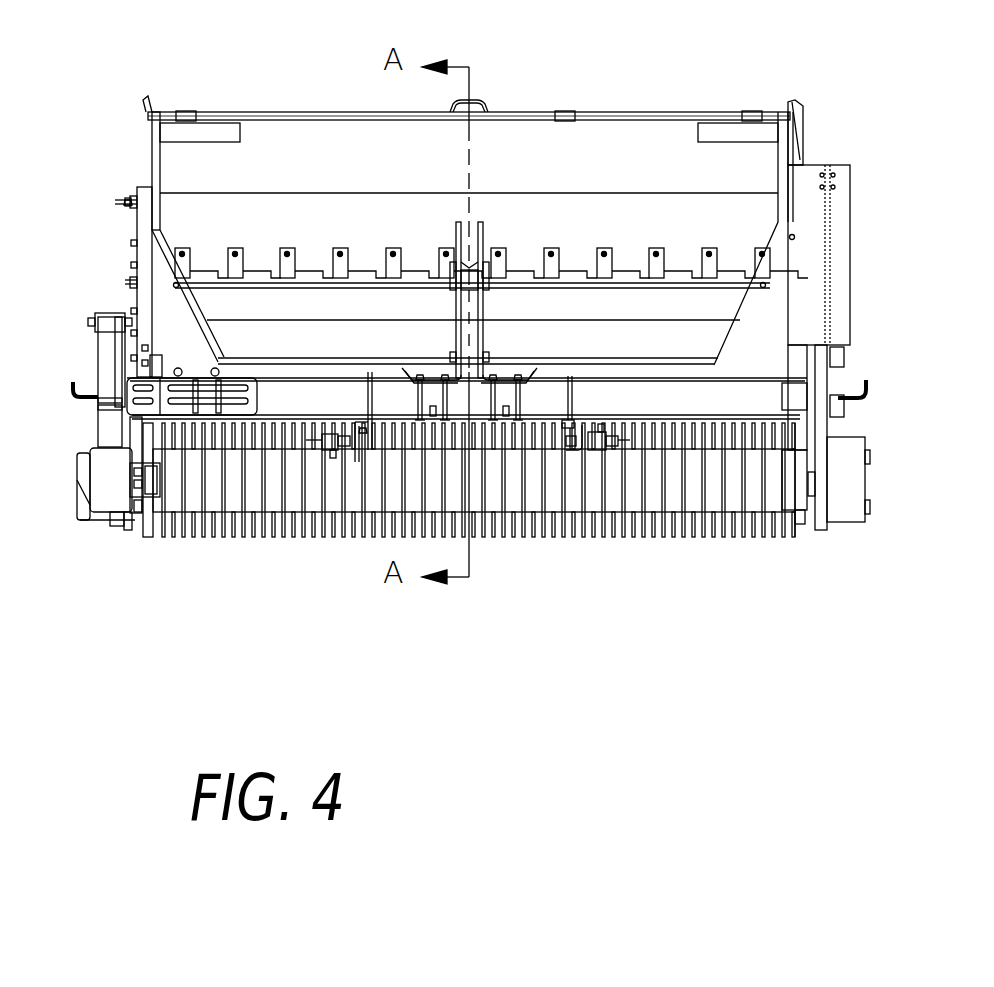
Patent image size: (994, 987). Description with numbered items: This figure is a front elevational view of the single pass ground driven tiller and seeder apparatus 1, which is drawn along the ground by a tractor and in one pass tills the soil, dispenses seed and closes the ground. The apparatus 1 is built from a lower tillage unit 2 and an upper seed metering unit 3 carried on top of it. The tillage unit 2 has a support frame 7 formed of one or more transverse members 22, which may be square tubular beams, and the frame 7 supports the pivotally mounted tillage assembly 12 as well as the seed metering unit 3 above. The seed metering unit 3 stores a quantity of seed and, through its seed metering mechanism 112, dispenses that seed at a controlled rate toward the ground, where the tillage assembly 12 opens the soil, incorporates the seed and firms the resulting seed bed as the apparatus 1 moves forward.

The single pass ground driven tiller and seeder apparatus 1 is at (573, 68).
The tillage unit 2 is at (127, 543).
The seed metering unit 3 is at (118, 140).
The support frame 7 is at (297, 398).
The tillage assembly 12 is at (848, 522).
The transverse member 22 is at (623, 403).
The seed metering mechanism 112 is at (498, 246).